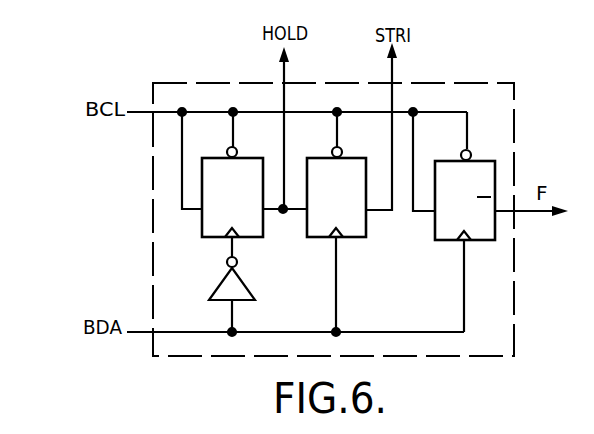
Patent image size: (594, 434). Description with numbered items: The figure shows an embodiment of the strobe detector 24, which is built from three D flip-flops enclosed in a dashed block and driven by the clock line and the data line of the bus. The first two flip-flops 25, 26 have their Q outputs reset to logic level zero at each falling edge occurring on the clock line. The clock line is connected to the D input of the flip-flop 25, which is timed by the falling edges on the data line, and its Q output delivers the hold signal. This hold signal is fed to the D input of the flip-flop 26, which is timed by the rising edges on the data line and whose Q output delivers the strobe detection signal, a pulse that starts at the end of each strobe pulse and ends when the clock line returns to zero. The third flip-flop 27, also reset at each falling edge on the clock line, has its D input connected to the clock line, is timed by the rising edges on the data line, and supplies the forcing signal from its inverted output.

The strobe detector 24 is at (514, 288).
The D flip-flop 25 is at (200, 234).
The D flip-flop 26 is at (316, 239).
The D flip-flop 27 is at (432, 241).